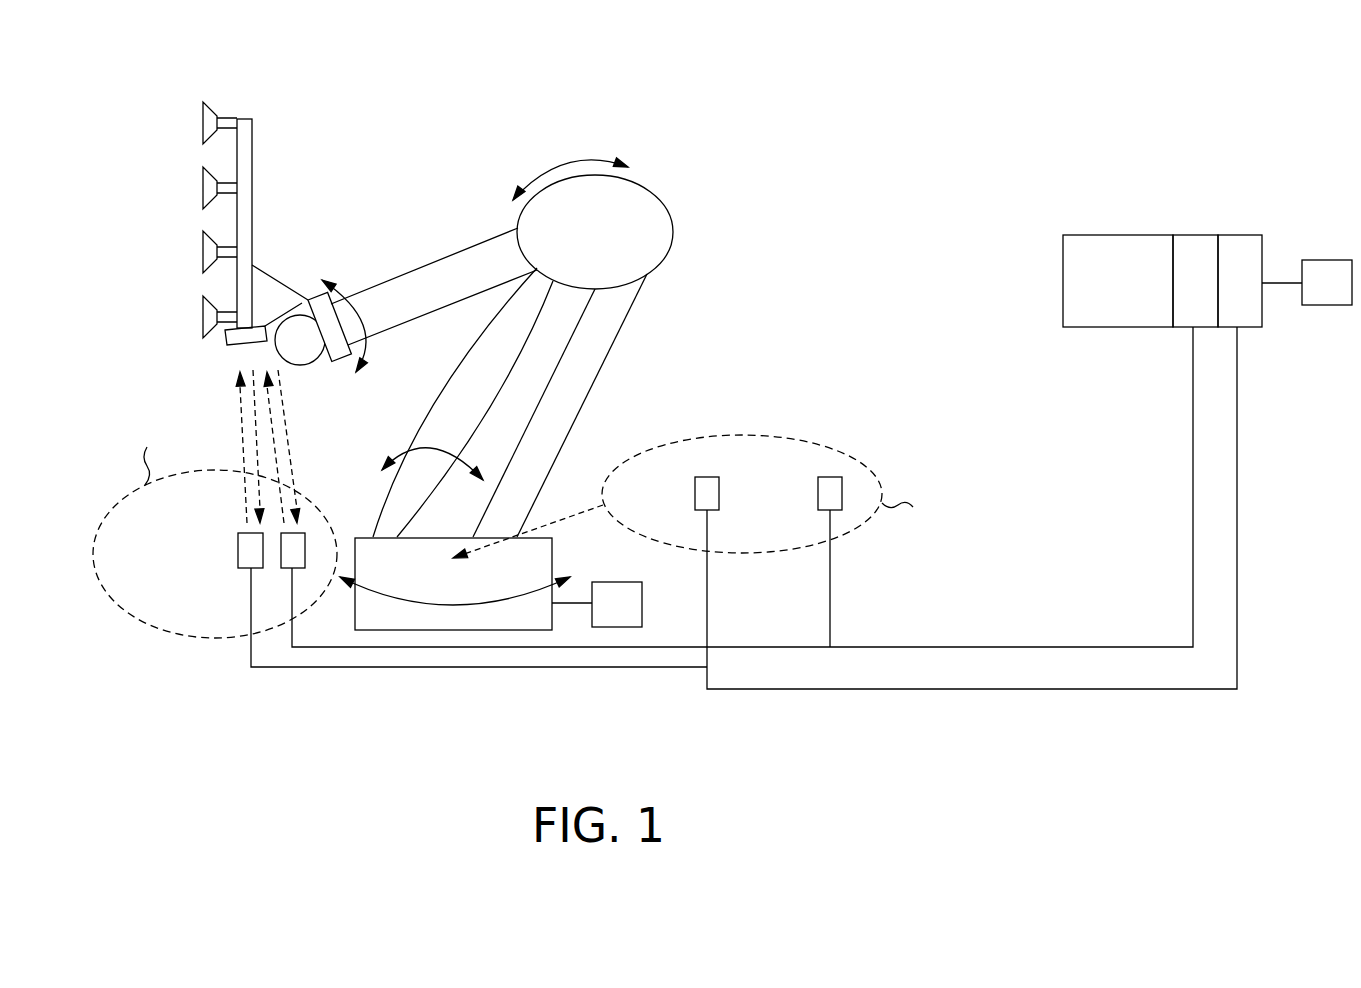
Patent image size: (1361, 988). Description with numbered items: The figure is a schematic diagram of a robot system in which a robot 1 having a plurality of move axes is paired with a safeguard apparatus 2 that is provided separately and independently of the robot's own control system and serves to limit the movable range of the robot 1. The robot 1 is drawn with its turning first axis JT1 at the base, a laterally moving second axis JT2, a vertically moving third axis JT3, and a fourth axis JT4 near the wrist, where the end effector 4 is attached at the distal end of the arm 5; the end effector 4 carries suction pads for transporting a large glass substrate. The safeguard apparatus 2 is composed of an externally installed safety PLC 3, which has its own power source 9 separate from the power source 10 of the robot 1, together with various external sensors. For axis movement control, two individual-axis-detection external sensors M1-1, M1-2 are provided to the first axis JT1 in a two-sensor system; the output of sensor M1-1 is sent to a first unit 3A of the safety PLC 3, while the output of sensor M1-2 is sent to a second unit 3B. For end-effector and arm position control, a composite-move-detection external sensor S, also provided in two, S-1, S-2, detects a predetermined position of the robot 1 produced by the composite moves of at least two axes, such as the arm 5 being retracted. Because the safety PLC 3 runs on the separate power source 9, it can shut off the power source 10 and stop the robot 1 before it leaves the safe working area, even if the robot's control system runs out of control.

The robot 1 is at (575, 82).
The safeguard apparatus 2 is at (763, 724).
The safety PLC 3 is at (1123, 235).
The first unit 3A is at (1240, 235).
The second unit 3B is at (1195, 235).
The end effector 4 is at (247, 119).
The arm 5 is at (442, 235).
The power source 9 is at (1325, 258).
The power source 10 is at (642, 603).
The composite-move-detection external sensor S is at (172, 533).
The composite-move-detection external sensor S-1 is at (238, 552).
The composite-move-detection external sensor S-2 is at (281, 575).
The individual-axis-detection external sensor M1-1 is at (677, 503).
The individual-axis-detection external sensor M1-2 is at (796, 503).
The first axis JT1 is at (455, 584).
The second axis JT2 is at (510, 402).
The third axis JT3 is at (593, 214).
The fourth axis JT4 is at (339, 317).